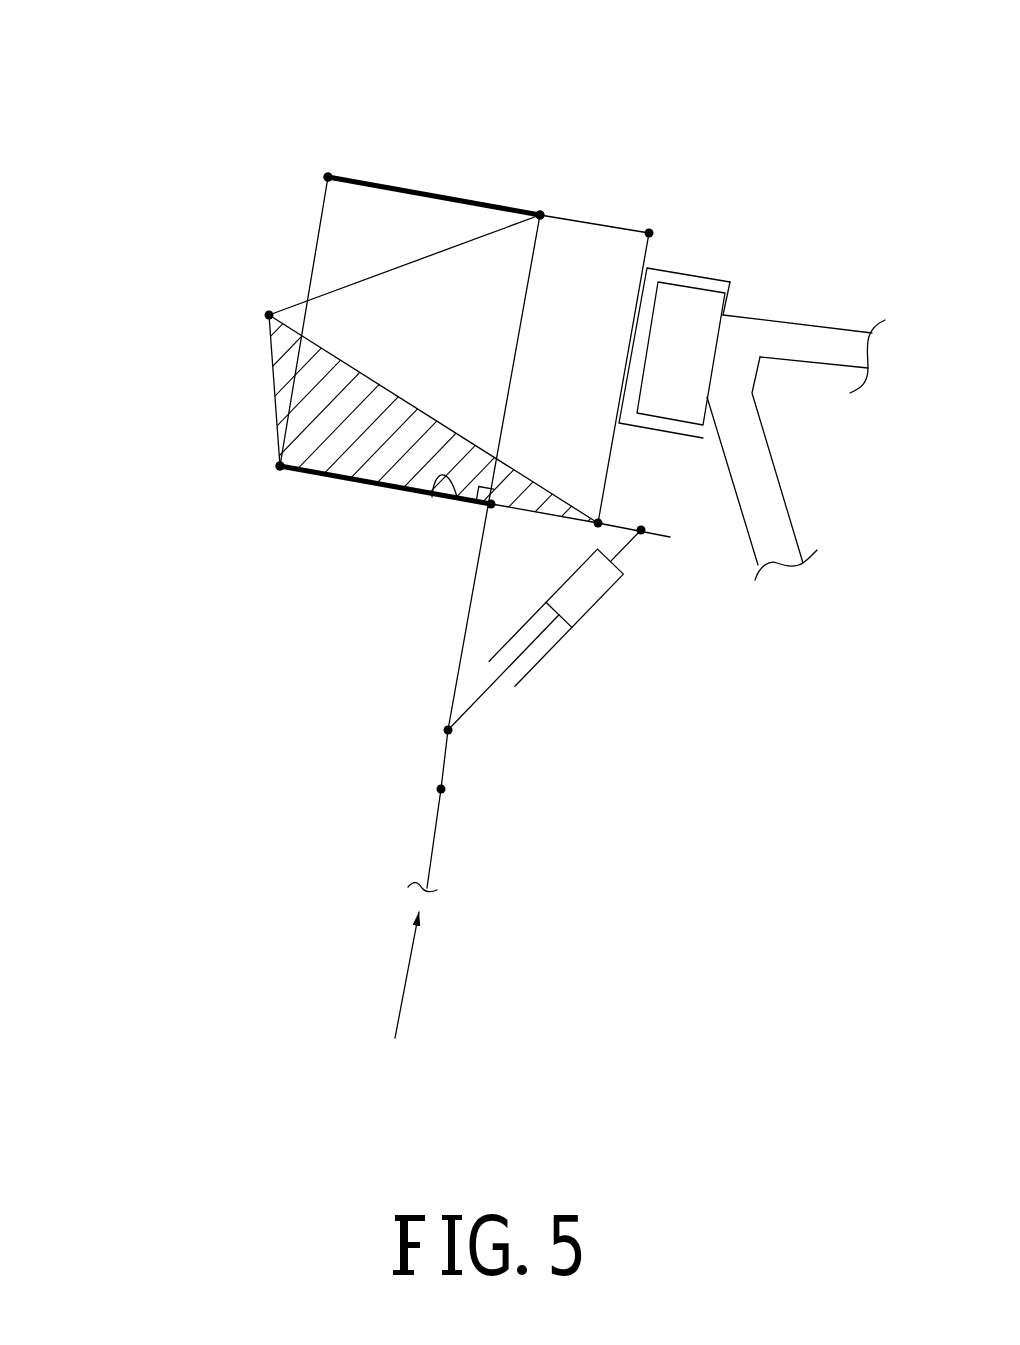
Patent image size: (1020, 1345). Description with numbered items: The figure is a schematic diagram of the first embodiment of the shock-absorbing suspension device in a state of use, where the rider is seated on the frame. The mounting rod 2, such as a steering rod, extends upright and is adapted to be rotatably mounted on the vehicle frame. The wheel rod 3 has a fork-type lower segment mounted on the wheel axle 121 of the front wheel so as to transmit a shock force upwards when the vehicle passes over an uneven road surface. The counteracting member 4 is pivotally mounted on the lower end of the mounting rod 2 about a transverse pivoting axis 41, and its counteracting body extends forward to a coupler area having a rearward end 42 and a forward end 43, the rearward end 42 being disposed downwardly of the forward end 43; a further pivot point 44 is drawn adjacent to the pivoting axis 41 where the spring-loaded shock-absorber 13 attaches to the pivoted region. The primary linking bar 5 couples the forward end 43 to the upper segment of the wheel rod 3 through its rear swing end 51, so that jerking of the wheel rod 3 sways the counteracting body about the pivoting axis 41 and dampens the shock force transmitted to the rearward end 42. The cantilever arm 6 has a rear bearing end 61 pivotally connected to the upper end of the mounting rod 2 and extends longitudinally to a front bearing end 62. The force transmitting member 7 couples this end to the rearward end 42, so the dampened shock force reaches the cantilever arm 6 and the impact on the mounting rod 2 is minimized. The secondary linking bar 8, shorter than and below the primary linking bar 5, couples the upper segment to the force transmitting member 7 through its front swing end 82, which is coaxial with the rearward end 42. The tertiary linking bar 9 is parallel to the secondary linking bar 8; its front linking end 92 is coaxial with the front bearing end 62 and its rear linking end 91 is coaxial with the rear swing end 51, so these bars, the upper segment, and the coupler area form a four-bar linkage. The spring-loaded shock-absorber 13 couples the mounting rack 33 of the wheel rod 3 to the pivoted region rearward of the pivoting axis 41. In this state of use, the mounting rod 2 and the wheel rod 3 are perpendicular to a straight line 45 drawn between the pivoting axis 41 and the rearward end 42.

The mounting rod 2 is at (658, 298).
The wheel rod 3 is at (467, 622).
The counteracting member 4 is at (275, 373).
The primary linking bar 5 is at (383, 272).
The cantilever arm 6 is at (596, 222).
The force transmitting member 7 is at (317, 227).
The secondary linking bar 8 is at (357, 481).
The tertiary linking bar 9 is at (428, 193).
The spring-loaded shock-absorber 13 is at (588, 618).
The mounting rack 33 is at (452, 733).
The pivoting axis 41 is at (595, 528).
The rearward end 42 is at (279, 467).
The forward end 43 is at (268, 313).
The pivot 44 is at (645, 534).
The straight line 45 is at (417, 500).
The rear swing end 51 is at (540, 215).
The rear bearing end 61 is at (650, 233).
The front bearing end 62 is at (328, 177).
The front swing end 82 is at (280, 466).
The rear linking end 91 is at (541, 213).
The front linking end 92 is at (329, 176).
The wheel axle 121 is at (445, 790).